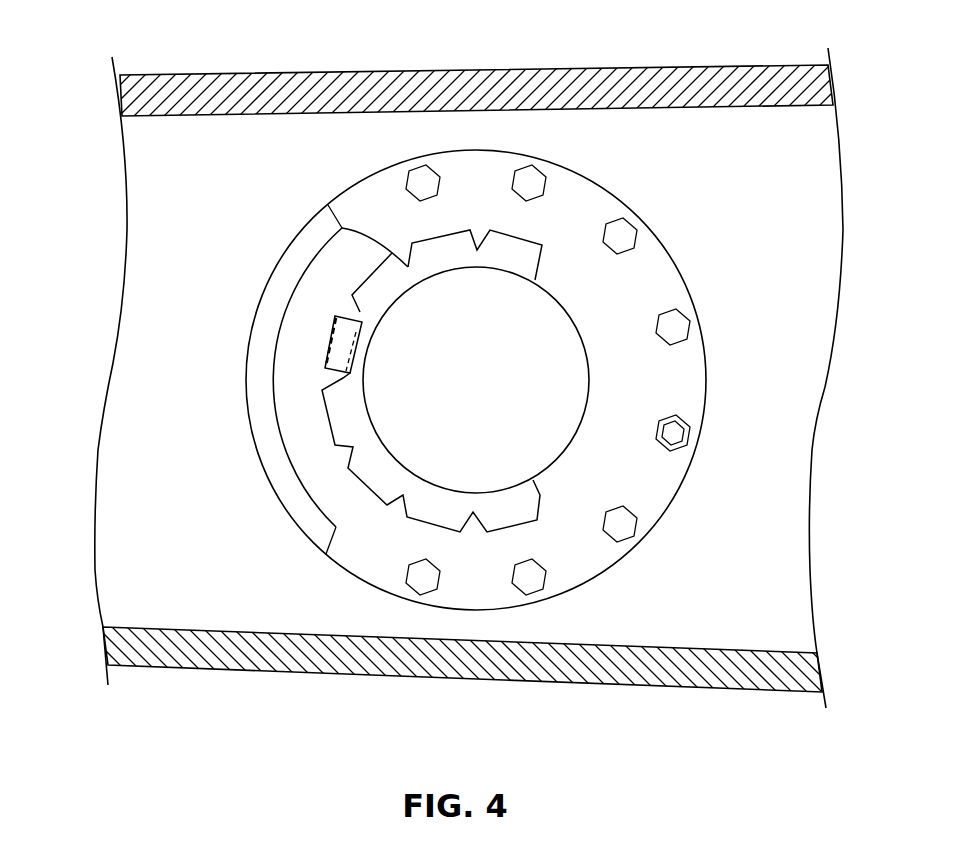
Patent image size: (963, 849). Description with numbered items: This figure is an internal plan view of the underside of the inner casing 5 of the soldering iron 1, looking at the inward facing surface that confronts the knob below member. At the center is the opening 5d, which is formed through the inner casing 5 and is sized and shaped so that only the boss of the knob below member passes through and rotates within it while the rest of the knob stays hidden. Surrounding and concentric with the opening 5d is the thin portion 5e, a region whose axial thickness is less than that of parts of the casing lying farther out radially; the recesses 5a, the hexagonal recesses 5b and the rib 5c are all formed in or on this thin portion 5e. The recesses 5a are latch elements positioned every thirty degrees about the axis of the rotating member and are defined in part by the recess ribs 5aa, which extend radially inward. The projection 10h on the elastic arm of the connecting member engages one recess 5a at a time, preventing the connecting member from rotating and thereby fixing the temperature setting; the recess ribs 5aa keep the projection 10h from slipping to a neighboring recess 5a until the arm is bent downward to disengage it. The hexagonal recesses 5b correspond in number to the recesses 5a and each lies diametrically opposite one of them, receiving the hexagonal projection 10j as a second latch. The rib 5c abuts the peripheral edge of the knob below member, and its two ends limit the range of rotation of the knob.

The soldering iron 1 is at (78, 56).
The inner casing 5 is at (274, 82).
The recess 5a is at (448, 238).
The recess rib 5aa is at (477, 246).
The hexagonal recess 5b is at (415, 180).
The rib 5c is at (267, 303).
The opening 5d is at (560, 315).
The thin portion 5e is at (658, 277).
The projection 10h is at (358, 345).
The hexagonal projection 10j is at (665, 425).